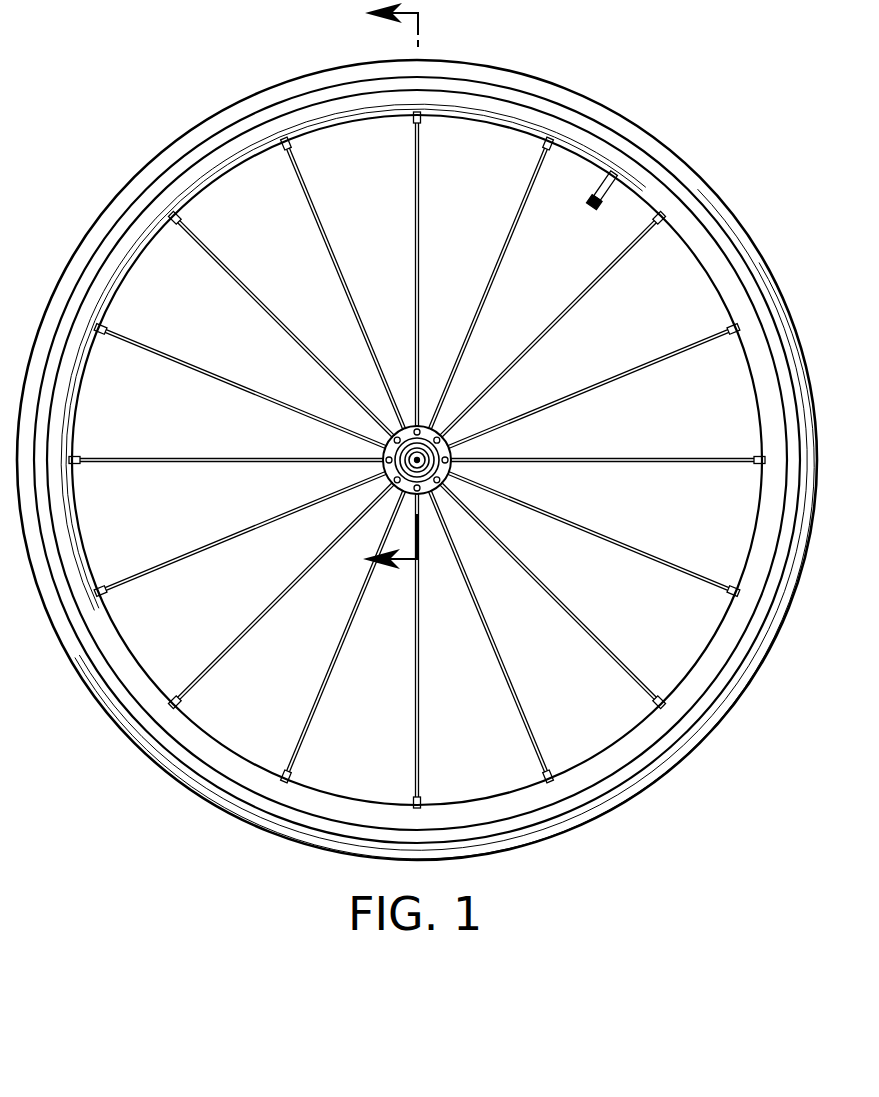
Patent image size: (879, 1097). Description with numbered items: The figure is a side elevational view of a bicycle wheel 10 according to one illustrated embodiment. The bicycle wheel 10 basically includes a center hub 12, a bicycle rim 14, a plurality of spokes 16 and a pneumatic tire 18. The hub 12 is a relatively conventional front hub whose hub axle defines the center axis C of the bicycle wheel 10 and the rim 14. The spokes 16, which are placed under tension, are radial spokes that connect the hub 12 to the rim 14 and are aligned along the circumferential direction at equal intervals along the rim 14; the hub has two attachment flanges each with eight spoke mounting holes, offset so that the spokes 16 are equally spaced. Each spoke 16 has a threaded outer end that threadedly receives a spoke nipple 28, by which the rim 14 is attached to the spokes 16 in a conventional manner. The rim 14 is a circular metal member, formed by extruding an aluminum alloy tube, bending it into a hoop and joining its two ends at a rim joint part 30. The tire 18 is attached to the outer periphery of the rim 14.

The bicycle wheel 10 is at (624, 86).
The center hub 12 is at (458, 452).
The bicycle rim 14 is at (354, 124).
The spokes 16 is at (339, 279).
The pneumatic tire 18 is at (245, 88).
The spoke nipple 28 is at (660, 221).
The rim joint part 30 is at (202, 778).
The center axis C is at (417, 460).